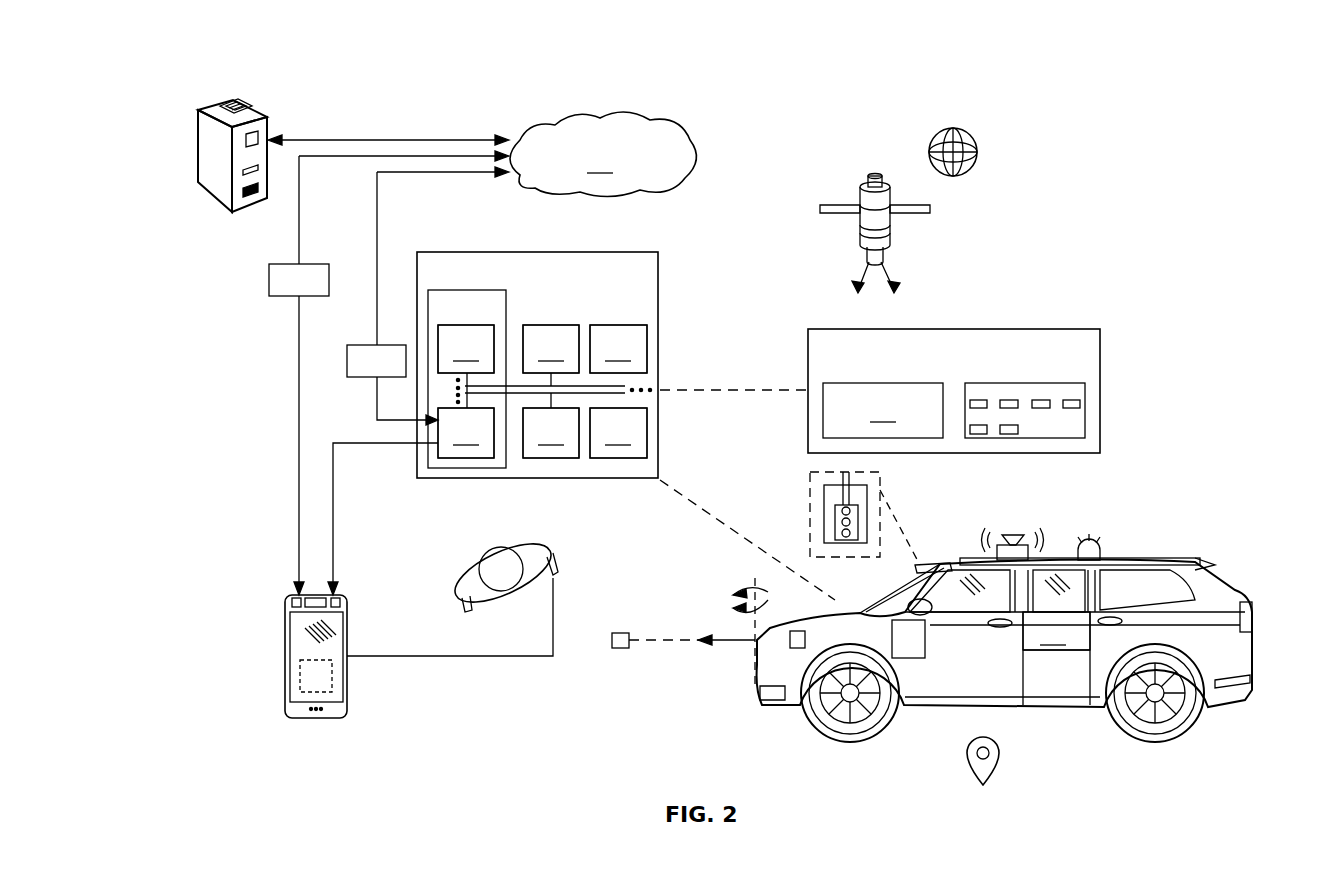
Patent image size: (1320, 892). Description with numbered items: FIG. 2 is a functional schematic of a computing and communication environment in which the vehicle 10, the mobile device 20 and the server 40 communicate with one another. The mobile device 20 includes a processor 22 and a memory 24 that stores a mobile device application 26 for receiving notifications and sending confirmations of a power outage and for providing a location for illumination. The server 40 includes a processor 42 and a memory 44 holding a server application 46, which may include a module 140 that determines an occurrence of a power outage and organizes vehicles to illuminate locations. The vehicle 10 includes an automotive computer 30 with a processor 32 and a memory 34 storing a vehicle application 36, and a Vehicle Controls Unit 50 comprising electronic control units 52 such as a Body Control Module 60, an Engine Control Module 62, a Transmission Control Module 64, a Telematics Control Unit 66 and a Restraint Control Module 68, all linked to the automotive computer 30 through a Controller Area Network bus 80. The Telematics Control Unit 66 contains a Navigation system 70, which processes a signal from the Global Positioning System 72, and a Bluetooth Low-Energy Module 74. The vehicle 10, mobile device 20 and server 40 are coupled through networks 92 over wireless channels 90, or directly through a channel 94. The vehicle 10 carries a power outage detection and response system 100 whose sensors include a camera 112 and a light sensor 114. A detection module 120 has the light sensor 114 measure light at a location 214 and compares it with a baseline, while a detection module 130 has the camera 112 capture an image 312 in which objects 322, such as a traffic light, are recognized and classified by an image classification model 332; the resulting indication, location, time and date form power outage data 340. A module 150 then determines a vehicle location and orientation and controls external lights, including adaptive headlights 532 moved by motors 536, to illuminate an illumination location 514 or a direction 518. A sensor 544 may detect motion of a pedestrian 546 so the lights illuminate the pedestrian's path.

The vehicle 10 is at (1056, 631).
The mobile device 20 is at (272, 650).
The processor 22 is at (290, 602).
The memory 24 is at (316, 596).
The mobile device application 26 is at (345, 606).
The automotive computer 30 is at (954, 375).
The processor 32 is at (883, 410).
The memory 34 is at (1086, 425).
The vehicle application 36 is at (1082, 404).
The server 40 is at (250, 74).
The processor 42 is at (268, 134).
The memory 44 is at (199, 128).
The server application 46 is at (228, 107).
The Vehicle Controls Unit 50 is at (488, 252).
The electronic control units 52 is at (575, 300).
The Body Control Module 60 is at (551, 349).
The Engine Control Module 62 is at (618, 349).
The Transmission Control Module 64 is at (551, 433).
The Telematics Control Unit 66 is at (478, 290).
The Restraint Control Module 68 is at (618, 433).
The Navigation system 70 is at (466, 364).
The Global Positioning System 72 is at (870, 178).
The Bluetooth Low-Energy Module 74 is at (466, 433).
The Controller Area Network bus 80 is at (620, 386).
The wireless channels 90 is at (428, 138).
The networks 92 is at (603, 154).
The channel 94 is at (335, 500).
The power outage detection and response system 100 is at (1112, 498).
The camera 112 is at (930, 565).
The light sensor 114 is at (1104, 552).
The detection module 120 is at (978, 400).
The detection module 130 is at (1008, 400).
The module 140 is at (245, 108).
The module 150 is at (1009, 434).
The location 214 is at (998, 742).
The image 312 is at (810, 502).
The objects 322 is at (870, 498).
The image classification model 332 is at (1044, 400).
The power outage data 340 is at (978, 434).
The illumination location 514 is at (620, 632).
The direction 518 is at (720, 640).
The adaptive headlights 532 is at (790, 640).
The motors 536 is at (771, 634).
The sensor 544 is at (1010, 534).
The pedestrian 546 is at (545, 545).